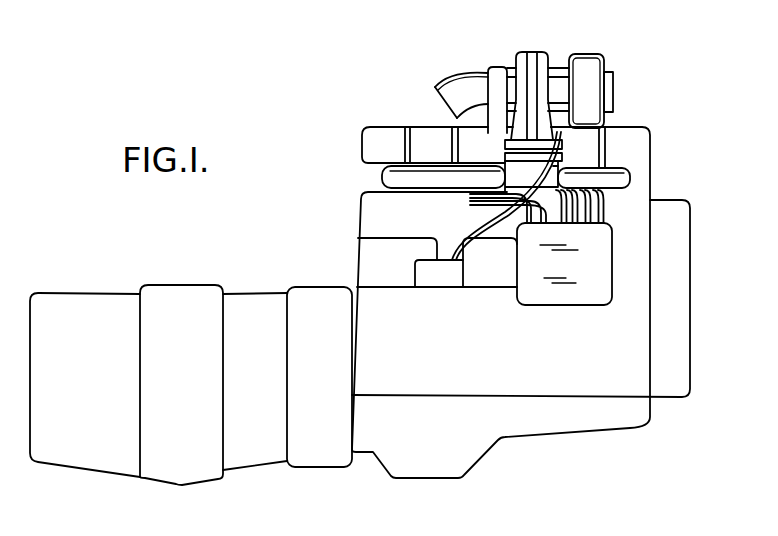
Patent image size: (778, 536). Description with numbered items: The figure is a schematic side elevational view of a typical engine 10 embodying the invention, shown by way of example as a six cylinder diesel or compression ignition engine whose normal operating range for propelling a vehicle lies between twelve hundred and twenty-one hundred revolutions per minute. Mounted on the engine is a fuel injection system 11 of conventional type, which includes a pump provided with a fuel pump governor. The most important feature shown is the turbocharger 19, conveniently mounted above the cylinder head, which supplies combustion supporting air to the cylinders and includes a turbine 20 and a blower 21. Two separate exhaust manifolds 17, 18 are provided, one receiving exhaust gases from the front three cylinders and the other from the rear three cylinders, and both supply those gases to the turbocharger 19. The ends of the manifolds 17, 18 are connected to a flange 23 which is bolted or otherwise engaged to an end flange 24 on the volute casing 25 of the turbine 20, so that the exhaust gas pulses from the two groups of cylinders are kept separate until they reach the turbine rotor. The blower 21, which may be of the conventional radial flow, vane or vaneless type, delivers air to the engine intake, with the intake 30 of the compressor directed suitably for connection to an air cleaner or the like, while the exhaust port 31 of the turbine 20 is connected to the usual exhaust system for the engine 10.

The engine 10 is at (324, 199).
The fuel injection system 11 is at (595, 270).
The exhaust manifold 17 is at (393, 178).
The exhaust manifold 18 is at (625, 177).
The turbocharger 19 is at (493, 49).
The turbine 20 is at (518, 48).
The blower 21 is at (589, 49).
The flange 23 is at (641, 124).
The end flange 24 is at (563, 158).
The volute casing 25 is at (542, 67).
The intake 30 is at (613, 90).
The exhaust port 31 is at (445, 93).